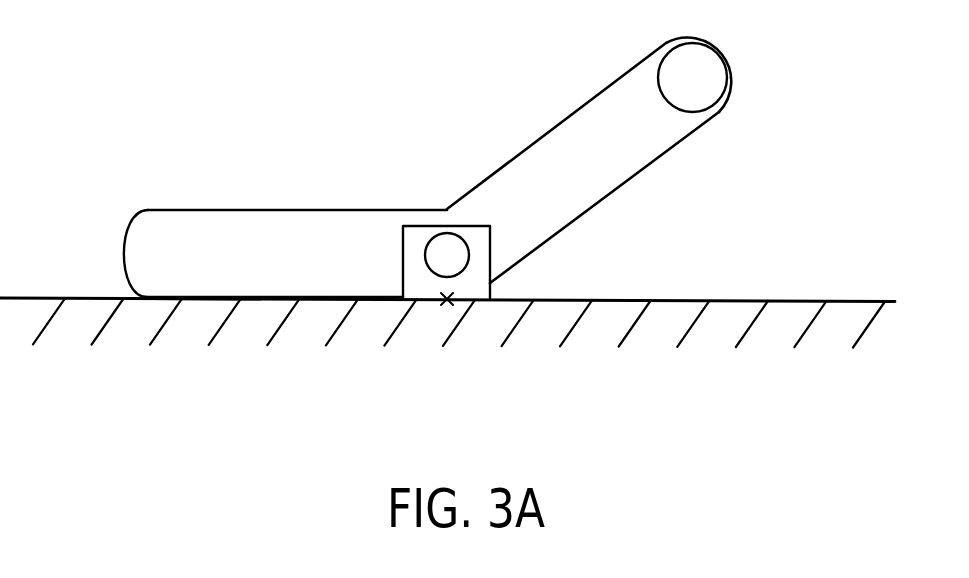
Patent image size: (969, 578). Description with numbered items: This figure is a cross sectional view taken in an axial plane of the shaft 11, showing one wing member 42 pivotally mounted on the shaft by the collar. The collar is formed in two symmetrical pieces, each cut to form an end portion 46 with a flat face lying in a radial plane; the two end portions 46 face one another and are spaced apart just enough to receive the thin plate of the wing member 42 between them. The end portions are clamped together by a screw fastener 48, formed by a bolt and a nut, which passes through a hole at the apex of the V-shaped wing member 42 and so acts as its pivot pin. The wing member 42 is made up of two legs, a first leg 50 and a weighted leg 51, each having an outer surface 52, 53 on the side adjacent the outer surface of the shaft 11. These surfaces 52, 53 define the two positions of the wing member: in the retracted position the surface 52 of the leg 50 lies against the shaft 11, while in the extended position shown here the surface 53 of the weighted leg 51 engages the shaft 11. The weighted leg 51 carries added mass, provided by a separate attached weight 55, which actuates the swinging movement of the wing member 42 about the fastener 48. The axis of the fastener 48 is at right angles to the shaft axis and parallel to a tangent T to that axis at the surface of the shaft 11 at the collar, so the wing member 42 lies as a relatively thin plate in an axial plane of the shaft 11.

The shaft 11 is at (727, 315).
The wing member 42 is at (266, 204).
The end portion 46 is at (418, 298).
The screw fastener 48 is at (442, 253).
The leg 50 is at (152, 247).
The weighted leg 51 is at (636, 149).
The outer surface of leg 52 is at (209, 302).
The outer surface of leg 53 is at (553, 243).
The attached weight 55 is at (705, 72).
The tangent T is at (448, 303).